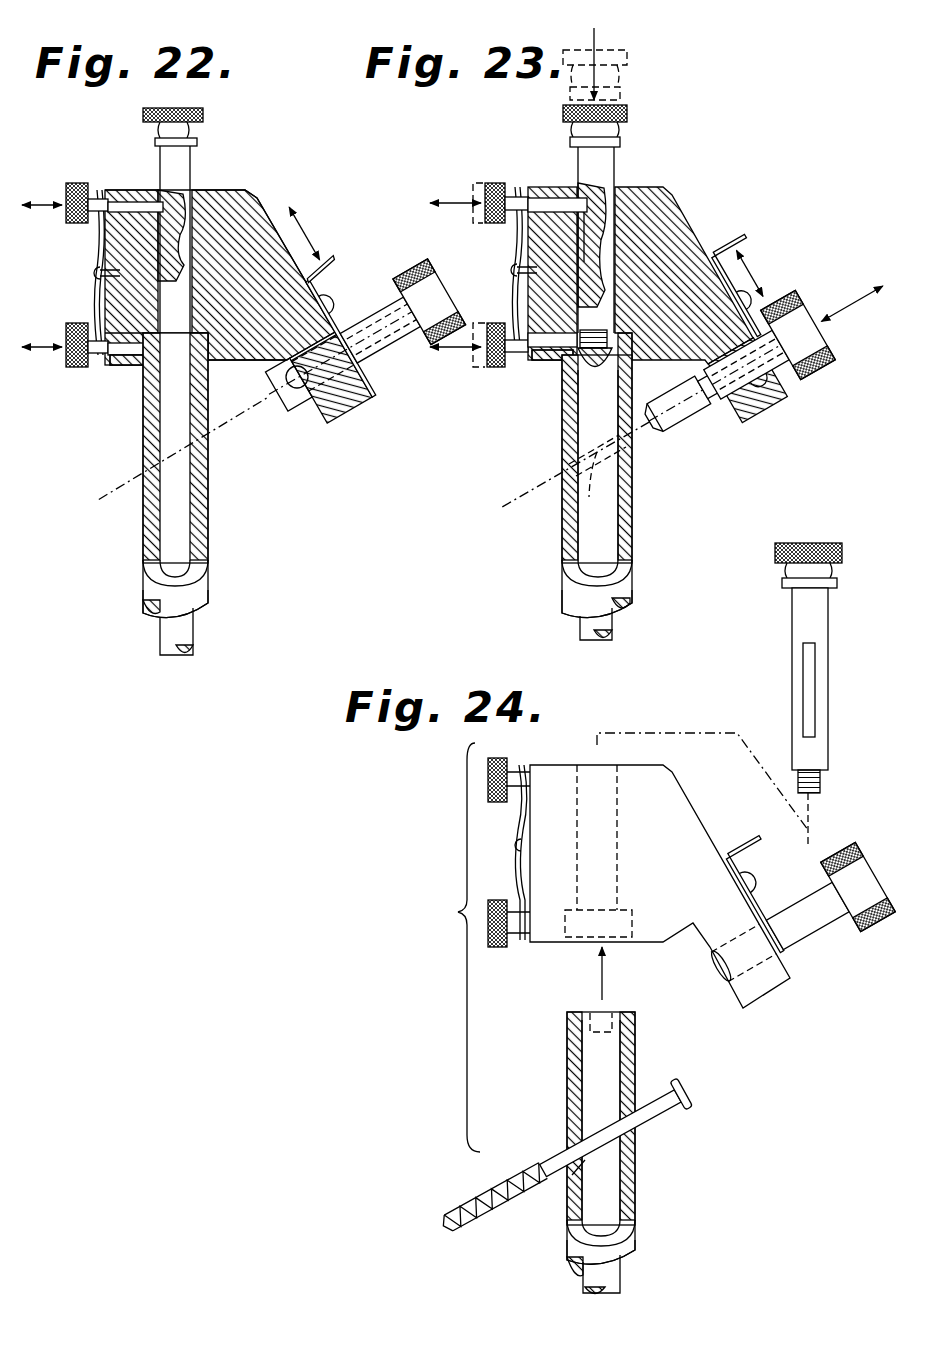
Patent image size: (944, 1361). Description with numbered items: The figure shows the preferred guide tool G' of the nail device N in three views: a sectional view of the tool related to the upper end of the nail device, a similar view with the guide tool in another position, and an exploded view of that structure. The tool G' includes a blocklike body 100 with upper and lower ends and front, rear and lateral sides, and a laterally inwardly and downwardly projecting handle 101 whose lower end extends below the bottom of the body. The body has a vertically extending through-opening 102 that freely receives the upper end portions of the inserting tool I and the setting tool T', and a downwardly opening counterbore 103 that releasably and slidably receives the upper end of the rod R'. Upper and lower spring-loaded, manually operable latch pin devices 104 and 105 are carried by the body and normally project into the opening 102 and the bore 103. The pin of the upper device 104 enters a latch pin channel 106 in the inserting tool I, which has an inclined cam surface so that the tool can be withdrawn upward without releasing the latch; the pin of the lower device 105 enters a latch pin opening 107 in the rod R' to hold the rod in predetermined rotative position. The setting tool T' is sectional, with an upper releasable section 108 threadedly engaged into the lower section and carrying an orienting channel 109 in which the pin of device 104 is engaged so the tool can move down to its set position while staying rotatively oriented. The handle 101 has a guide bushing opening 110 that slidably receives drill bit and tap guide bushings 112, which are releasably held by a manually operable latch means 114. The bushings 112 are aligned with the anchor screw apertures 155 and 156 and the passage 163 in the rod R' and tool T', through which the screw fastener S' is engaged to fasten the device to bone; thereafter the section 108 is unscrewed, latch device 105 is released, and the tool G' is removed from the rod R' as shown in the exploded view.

In FIG. 22, the blocklike body 100 is at (245, 240).
In FIG. 24, the blocklike body 100 is at (650, 810).
In FIG. 22, the projection or handle 101 is at (330, 418).
In FIG. 23, the projection or handle 101 is at (776, 405).
In FIG. 24, the projection or handle 101 is at (770, 992).
In FIG. 22, the through-opening 102 is at (192, 215).
In FIG. 23, the through-opening 102 is at (606, 228).
In FIG. 22, the bore 103 is at (212, 366).
In FIG. 23, the bore 103 is at (563, 400).
In FIG. 22, the upper latch pin device 104 is at (131, 202).
In FIG. 23, the upper latch pin device 104 is at (546, 194).
In FIG. 24, the upper latch pin device 104 is at (540, 733).
In FIG. 22, the lower latch pin device 105 is at (122, 372).
In FIG. 23, the lower latch pin device 105 is at (489, 372).
In FIG. 24, the lower latch pin device 105 is at (505, 950).
In FIG. 22, the latch pin channel 106 is at (165, 220).
In FIG. 22, the latch pin opening 107 is at (132, 368).
In FIG. 23, the latch pin opening 107 is at (543, 367).
In FIG. 24, the latch pin opening 107 is at (567, 1040).
In FIG. 22, the upper releasable section 108 is at (190, 158).
In FIG. 23, the upper releasable section 108 is at (614, 157).
In FIG. 24, the upper releasable section 108 is at (792, 616).
In FIG. 23, the orienting channel 109 is at (583, 228).
In FIG. 24, the orienting channel 109 is at (806, 668).
In FIG. 22, the guide bushing opening 110 is at (297, 392).
In FIG. 23, the guide bushing opening 110 is at (753, 403).
In FIG. 22, the guide bushings 112 is at (383, 352).
In FIG. 23, the guide bushings 112 is at (784, 383).
In FIG. 24, the guide bushings 112 is at (821, 930).
In FIG. 22, the latch means 114 is at (323, 275).
In FIG. 23, the latch means 114 is at (747, 238).
In FIG. 24, the latch means 114 is at (760, 898).
In FIG. 23, the anchor screw aperture 155 is at (618, 432).
In FIG. 24, the anchor screw aperture 155 is at (640, 1107).
In FIG. 23, the anchor screw aperture 156 is at (573, 470).
In FIG. 24, the anchor screw aperture 156 is at (578, 1167).
In FIG. 23, the anchor screw opening or passage 163 is at (550, 510).
In FIG. 22, the guide tool G' is at (220, 260).
In FIG. 23, the guide tool G' is at (640, 264).
In FIG. 22, the rod R' is at (209, 587).
In FIG. 23, the rod R' is at (625, 581).
In FIG. 24, the rod R' is at (632, 1230).
In FIG. 22, the nail device N is at (143, 597).
In FIG. 23, the nail device N is at (558, 578).
In FIG. 24, the nail device N is at (565, 1248).
In FIG. 22, the inserting tool I is at (190, 635).
In FIG. 23, the setting tool T' is at (625, 465).
In FIG. 24, the setting tool T' is at (636, 1128).
In FIG. 24, the screw fastener S' is at (560, 1161).